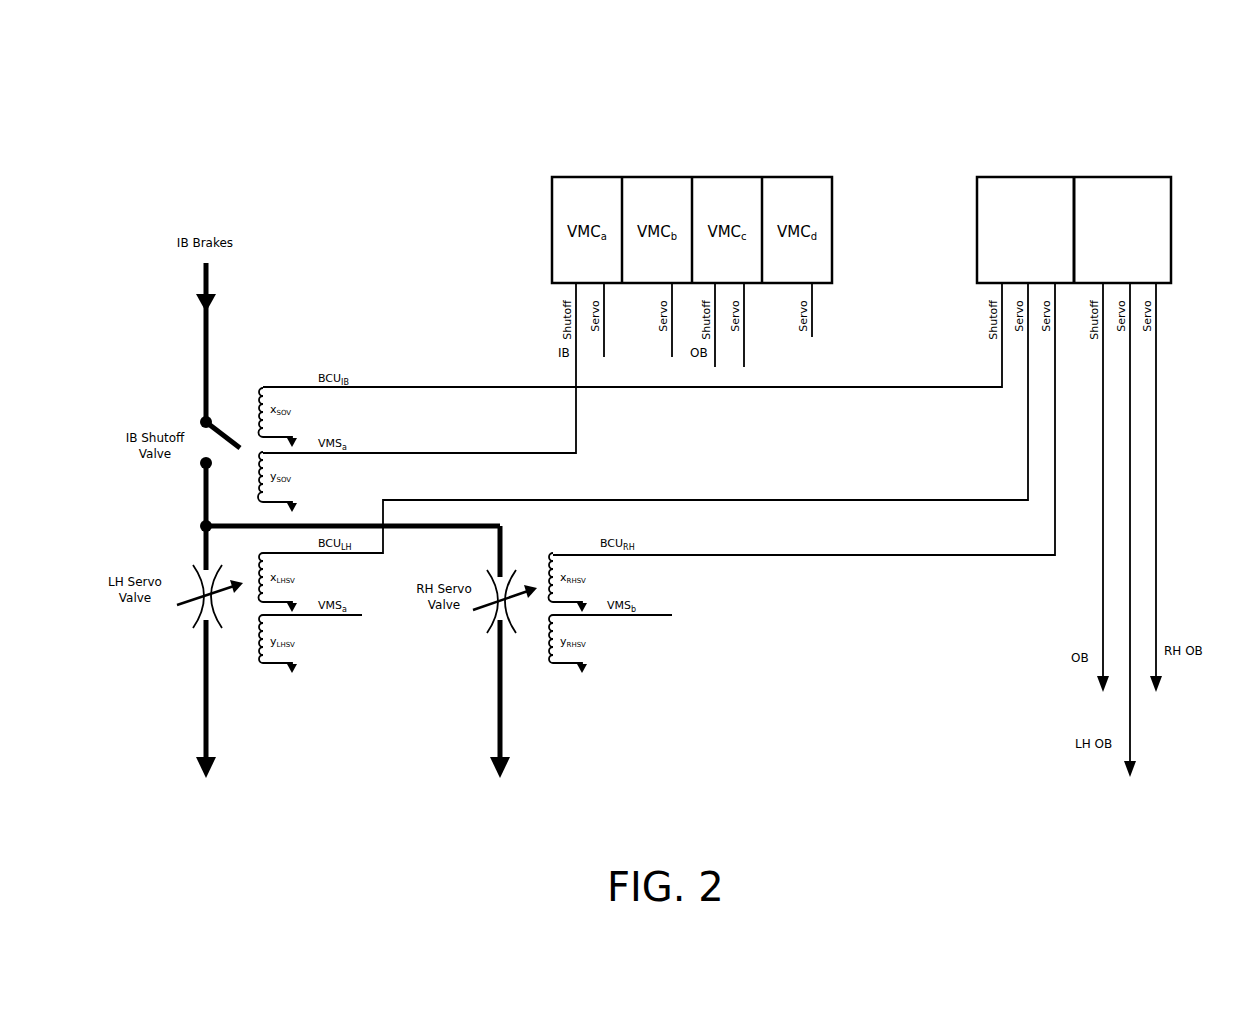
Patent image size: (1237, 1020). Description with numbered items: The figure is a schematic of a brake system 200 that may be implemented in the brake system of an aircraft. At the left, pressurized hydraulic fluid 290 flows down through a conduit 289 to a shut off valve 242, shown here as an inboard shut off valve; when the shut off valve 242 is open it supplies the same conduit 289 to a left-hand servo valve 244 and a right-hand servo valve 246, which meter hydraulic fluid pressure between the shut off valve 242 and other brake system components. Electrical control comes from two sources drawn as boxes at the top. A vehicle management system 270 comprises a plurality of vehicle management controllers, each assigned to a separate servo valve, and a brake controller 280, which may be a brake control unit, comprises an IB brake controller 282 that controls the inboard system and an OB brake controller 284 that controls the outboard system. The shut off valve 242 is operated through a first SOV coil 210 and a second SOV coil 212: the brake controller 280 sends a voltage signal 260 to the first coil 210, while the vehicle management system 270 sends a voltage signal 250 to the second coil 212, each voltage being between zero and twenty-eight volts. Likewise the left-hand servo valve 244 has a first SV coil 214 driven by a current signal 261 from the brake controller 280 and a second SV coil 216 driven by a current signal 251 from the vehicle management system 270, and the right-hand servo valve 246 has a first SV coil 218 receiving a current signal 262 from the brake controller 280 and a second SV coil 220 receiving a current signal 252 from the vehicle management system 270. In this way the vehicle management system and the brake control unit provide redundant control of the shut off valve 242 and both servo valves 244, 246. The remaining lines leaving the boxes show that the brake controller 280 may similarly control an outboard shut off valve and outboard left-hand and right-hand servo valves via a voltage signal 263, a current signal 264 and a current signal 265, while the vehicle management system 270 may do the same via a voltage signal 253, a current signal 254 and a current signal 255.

The brake system 200 is at (422, 146).
The first SOV coil 210 is at (258, 396).
The second SOV coil 212 is at (256, 476).
The first SV coil 214 is at (256, 560).
The second SV coil 216 is at (248, 651).
The first SV coil 218 is at (548, 558).
The second SV coil 220 is at (546, 650).
The shut off valve 242 is at (185, 417).
The servo valve 244 is at (176, 560).
The servo valve 246 is at (470, 574).
The voltage signal 250 is at (576, 418).
The current signal 251 is at (604, 357).
The current signal 252 is at (672, 357).
The voltage signal 253 is at (715, 367).
The current signal 254 is at (744, 330).
The current signal 255 is at (812, 312).
The voltage signal 260 is at (930, 387).
The current signal 261 is at (1028, 455).
The current signal 262 is at (1010, 555).
The voltage signal 263 is at (1103, 646).
The current signal 264 is at (1130, 708).
The current signal 265 is at (1156, 410).
The vehicle management system 270 is at (600, 177).
The brake controller 280 is at (1050, 177).
The IB brake controller 282 is at (1003, 210).
The OB brake controller 284 is at (1152, 210).
The conduit 289 is at (210, 349).
The pressurized hydraulic fluid 290 is at (203, 324).